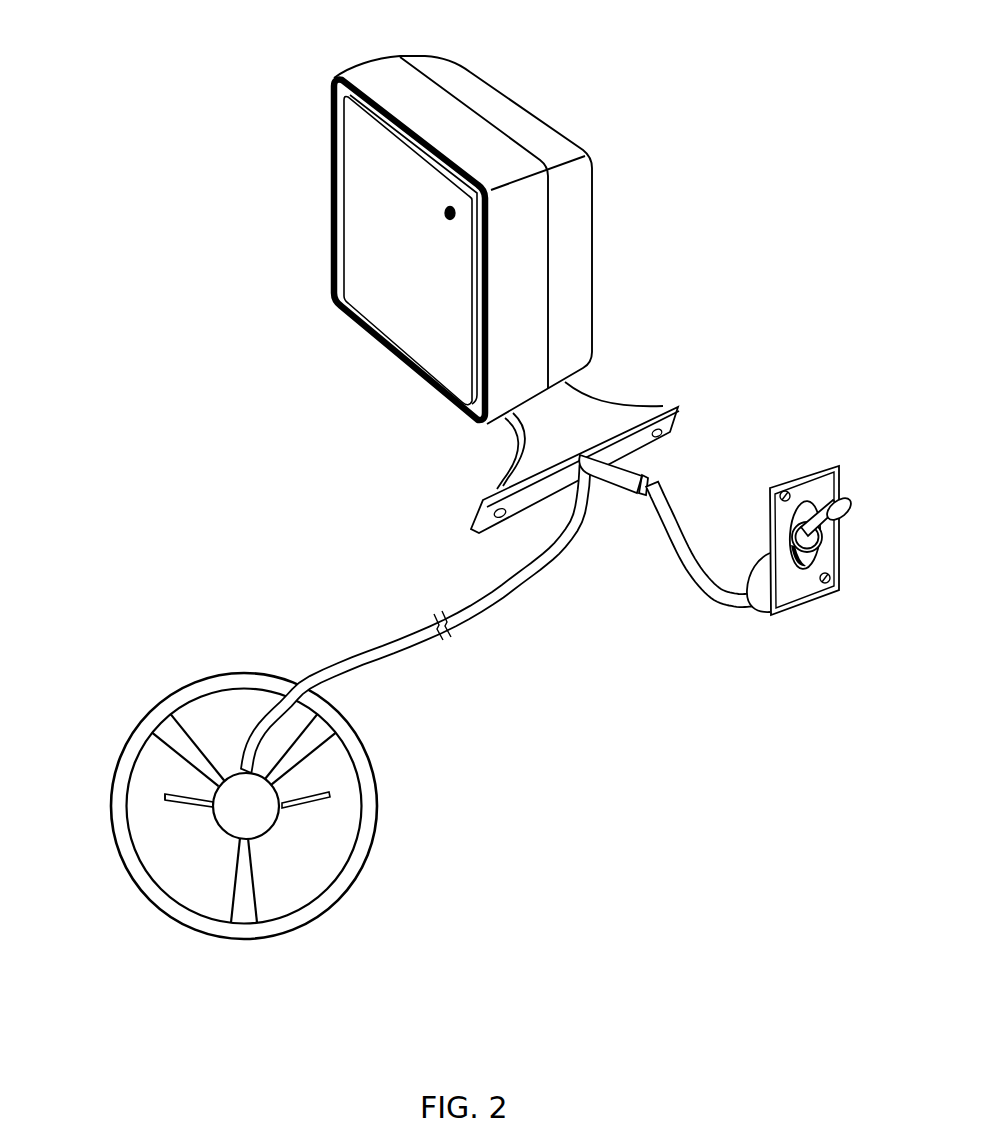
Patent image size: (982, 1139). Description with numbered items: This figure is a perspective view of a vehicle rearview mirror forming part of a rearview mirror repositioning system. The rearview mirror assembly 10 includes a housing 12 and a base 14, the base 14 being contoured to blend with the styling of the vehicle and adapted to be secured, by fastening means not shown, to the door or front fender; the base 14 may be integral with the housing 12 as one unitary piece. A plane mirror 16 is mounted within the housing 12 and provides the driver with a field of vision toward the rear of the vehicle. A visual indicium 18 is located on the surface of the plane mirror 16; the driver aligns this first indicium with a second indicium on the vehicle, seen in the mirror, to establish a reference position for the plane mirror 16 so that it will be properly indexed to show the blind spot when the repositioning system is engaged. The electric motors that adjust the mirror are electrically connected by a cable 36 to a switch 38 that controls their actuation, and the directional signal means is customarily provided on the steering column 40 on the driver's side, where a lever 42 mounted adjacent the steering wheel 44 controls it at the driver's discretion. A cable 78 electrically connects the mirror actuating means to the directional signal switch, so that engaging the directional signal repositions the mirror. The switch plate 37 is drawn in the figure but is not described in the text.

The rearview mirror assembly 10 is at (533, 47).
The housing 12 is at (385, 73).
The base 14 is at (597, 413).
The plane mirror 16 is at (375, 212).
The visual indicium 18 is at (455, 208).
The cable 36 is at (667, 510).
The switch plate 37 is at (823, 488).
The switch 38 is at (155, 786).
The steering column 40 is at (265, 815).
The lever 42 is at (187, 802).
The steering wheel 44 is at (247, 753).
The cable 78 is at (488, 598).